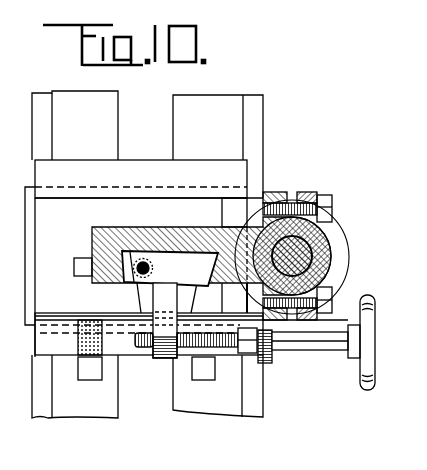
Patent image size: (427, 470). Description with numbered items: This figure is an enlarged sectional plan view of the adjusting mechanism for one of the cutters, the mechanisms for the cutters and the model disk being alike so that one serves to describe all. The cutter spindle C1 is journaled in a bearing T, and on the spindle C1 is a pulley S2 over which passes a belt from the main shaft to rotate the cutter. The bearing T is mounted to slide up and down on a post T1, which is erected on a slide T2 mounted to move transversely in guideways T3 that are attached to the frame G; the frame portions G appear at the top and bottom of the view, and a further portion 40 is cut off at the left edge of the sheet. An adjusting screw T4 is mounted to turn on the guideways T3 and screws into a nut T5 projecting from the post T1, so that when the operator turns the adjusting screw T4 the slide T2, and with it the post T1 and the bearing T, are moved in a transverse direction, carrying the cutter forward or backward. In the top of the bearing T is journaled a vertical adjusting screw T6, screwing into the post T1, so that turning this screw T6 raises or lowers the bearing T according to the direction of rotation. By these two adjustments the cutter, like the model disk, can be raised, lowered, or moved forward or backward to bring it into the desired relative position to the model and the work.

The frame G is at (112, 108).
The frame 40 is at (3, 145).
The bearing T is at (168, 234).
The post T1 is at (188, 262).
The slide T2 is at (38, 284).
The guideways T3 is at (45, 347).
The adjusting screw T4 is at (300, 355).
The nut T5 is at (160, 353).
The vertical adjusting screw T6 is at (142, 261).
The spindle C1 is at (300, 255).
The pulley S2 is at (337, 267).